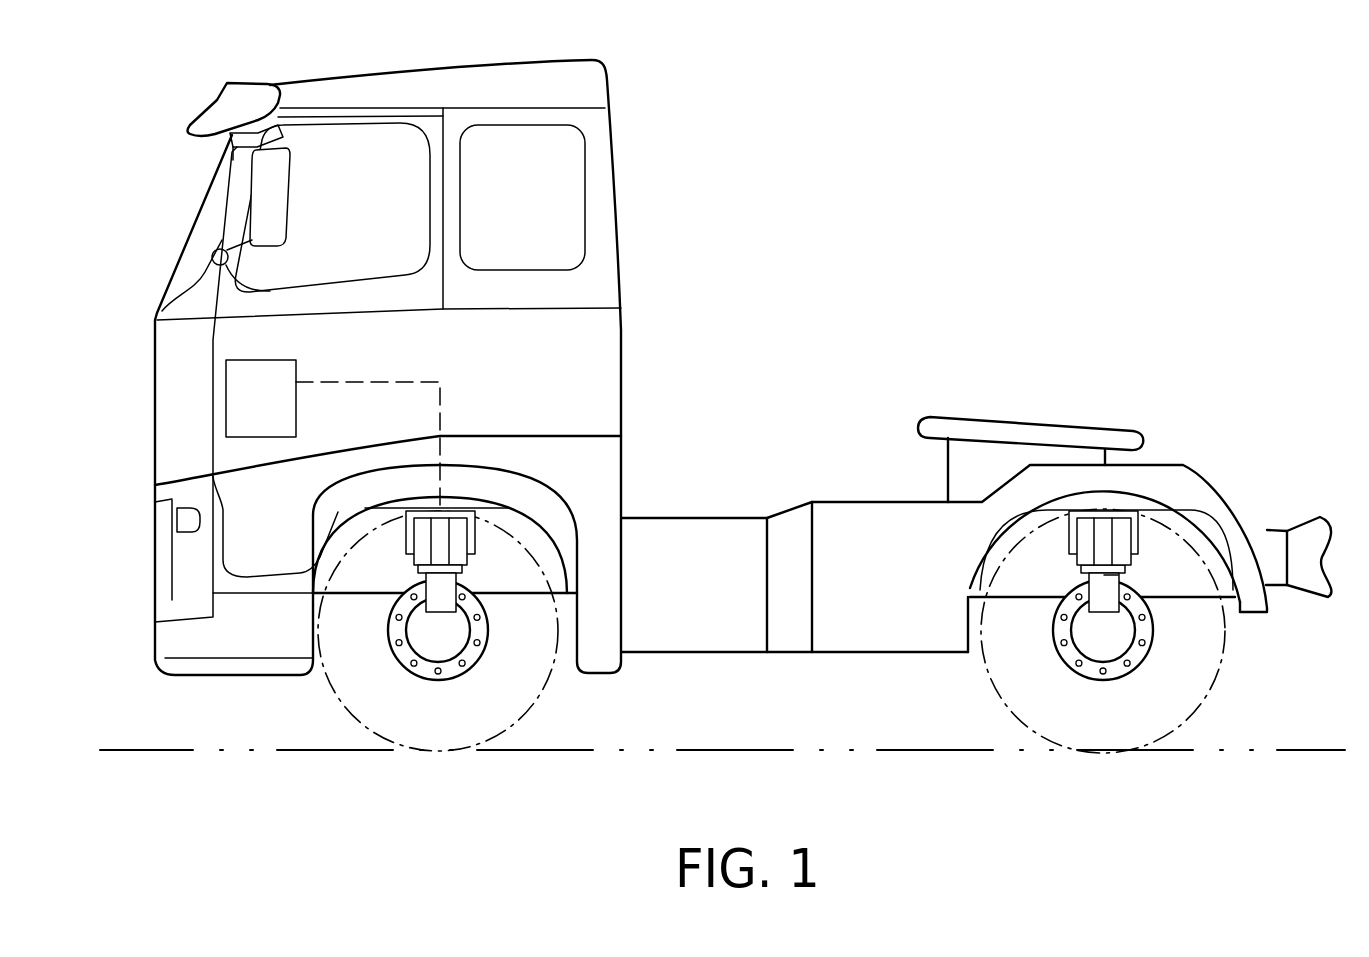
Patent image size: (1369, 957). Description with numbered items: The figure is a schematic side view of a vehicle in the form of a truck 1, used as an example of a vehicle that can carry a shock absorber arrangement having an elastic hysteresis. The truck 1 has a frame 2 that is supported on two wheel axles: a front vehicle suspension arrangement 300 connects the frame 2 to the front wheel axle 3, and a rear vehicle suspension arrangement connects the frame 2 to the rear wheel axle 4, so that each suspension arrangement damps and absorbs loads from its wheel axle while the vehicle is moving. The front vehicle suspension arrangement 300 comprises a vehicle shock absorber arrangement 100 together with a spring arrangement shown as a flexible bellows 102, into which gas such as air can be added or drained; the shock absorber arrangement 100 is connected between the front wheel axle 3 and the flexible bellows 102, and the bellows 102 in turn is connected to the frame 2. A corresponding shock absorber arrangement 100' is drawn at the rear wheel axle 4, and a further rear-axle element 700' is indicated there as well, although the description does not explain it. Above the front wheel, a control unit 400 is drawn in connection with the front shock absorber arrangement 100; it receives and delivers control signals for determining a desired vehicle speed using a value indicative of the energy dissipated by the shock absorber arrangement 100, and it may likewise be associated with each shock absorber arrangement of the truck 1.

The truck 1 is at (735, 103).
The frame 2 is at (441, 573).
The front wheel axle 3 is at (437, 632).
The rear wheel axle 4 is at (1103, 630).
The vehicle shock absorber arrangement 100 is at (526, 564).
The shock absorber arrangement 100' is at (1145, 583).
The flexible bellows 102 is at (427, 538).
The front vehicle suspension arrangement 300 is at (408, 569).
The control unit 400 is at (228, 360).
The rear wheel hub 700' is at (1189, 697).